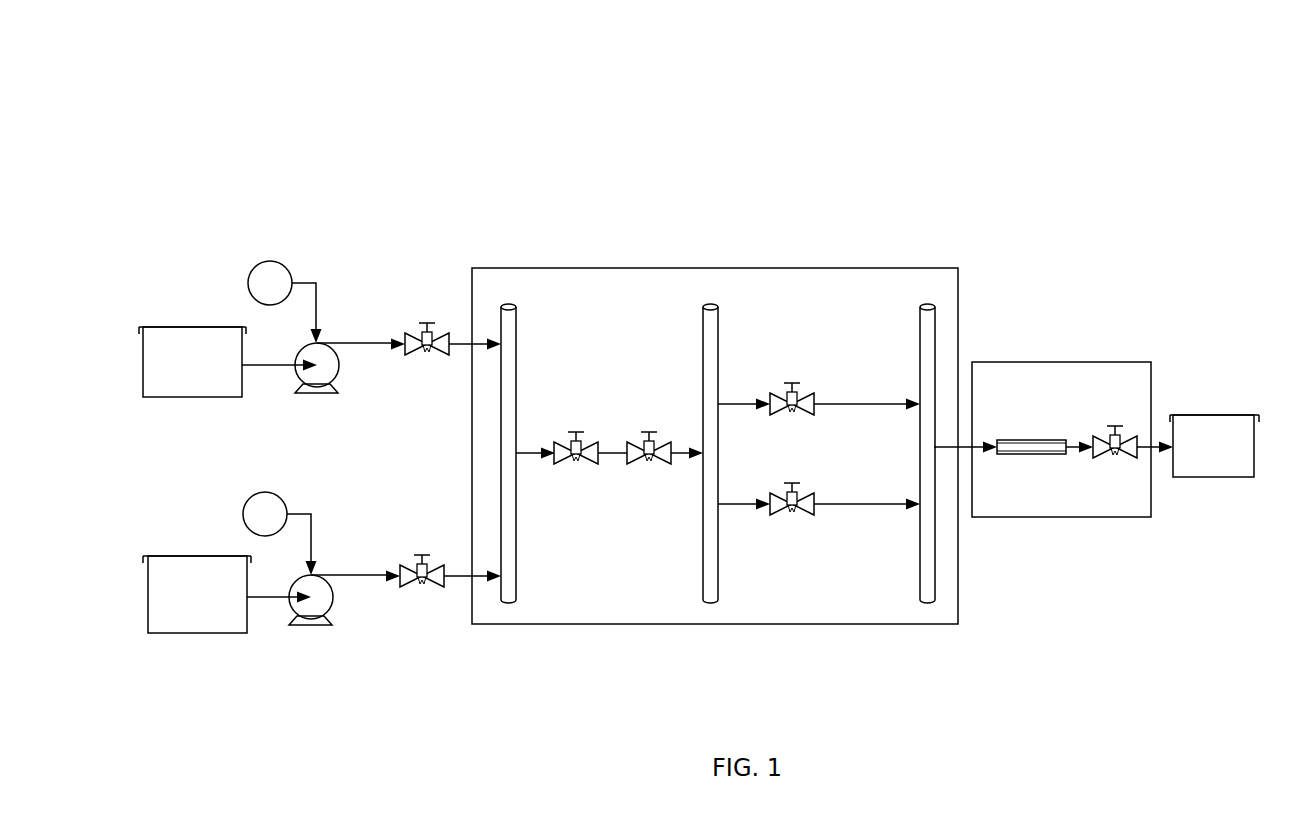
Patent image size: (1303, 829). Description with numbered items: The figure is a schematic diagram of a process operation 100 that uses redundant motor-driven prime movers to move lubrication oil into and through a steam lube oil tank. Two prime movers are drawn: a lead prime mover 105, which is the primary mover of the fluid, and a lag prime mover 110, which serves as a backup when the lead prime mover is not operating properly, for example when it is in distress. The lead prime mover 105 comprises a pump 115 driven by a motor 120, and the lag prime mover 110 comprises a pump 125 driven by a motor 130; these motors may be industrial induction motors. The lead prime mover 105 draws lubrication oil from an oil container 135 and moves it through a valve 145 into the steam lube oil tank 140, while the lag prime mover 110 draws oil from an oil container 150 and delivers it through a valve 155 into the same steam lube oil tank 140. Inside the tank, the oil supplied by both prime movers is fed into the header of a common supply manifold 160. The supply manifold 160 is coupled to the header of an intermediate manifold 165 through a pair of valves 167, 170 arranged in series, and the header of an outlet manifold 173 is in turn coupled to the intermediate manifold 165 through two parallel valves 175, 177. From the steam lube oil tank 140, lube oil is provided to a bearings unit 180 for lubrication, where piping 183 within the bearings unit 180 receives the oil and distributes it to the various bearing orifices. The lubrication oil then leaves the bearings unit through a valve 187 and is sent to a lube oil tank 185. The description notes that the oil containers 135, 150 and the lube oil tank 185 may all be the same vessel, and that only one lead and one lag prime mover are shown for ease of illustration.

The process operation 100 is at (158, 92).
The lead prime mover 105 is at (336, 270).
The lag prime mover 110 is at (327, 500).
The pump 115 is at (313, 393).
The motor 120 is at (270, 260).
The pump 125 is at (311, 625).
The motor 130 is at (265, 491).
The oil container 135 is at (171, 325).
The steam lube oil tank 140 is at (545, 267).
The valve 145 is at (426, 322).
The oil container 150 is at (172, 555).
The valve 155 is at (412, 588).
The common supply manifold 160 is at (518, 584).
The intermediate manifold 165 is at (720, 592).
The valve 167 is at (572, 465).
The valve 170 is at (633, 465).
The outlet manifold 173 is at (935, 592).
The valve 175 is at (793, 384).
The valve 177 is at (806, 516).
The bearings unit 180 is at (1005, 362).
The piping 183 is at (1030, 455).
The lube oil tank 185 is at (1214, 415).
The valve 187 is at (1113, 425).